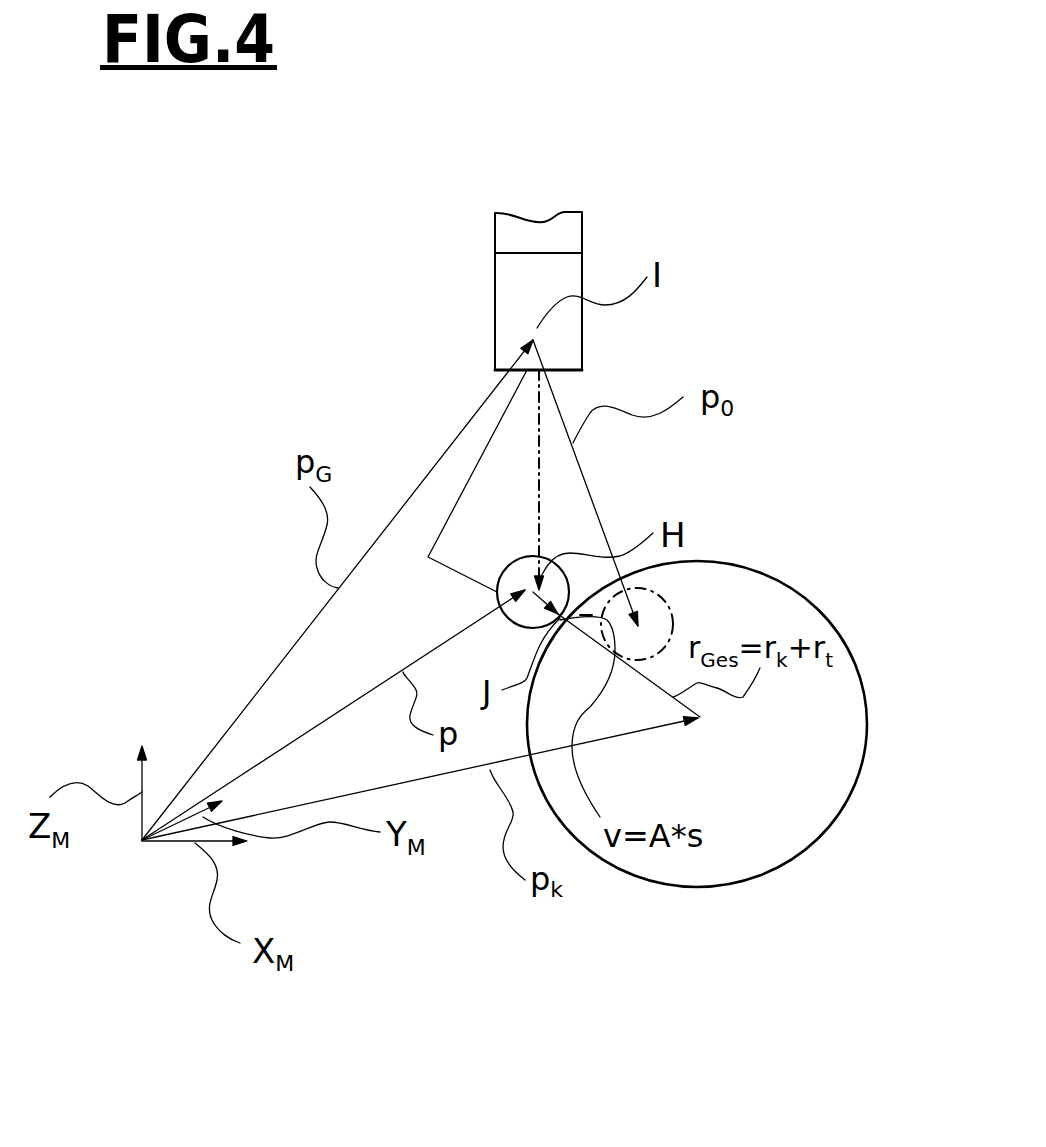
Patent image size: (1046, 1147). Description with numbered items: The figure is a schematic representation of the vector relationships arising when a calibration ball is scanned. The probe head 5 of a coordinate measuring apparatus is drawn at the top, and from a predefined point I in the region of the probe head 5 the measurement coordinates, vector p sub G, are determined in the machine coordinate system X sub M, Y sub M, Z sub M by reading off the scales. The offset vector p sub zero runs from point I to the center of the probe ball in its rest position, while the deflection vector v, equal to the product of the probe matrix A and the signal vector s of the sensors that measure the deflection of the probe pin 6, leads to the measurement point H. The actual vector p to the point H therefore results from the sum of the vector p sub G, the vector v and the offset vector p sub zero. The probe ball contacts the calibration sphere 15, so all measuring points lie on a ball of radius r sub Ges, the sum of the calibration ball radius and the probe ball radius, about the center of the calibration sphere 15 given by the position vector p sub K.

The probe head 5 is at (513, 272).
The probe pin 6 is at (482, 443).
The calibration sphere 15 is at (762, 595).